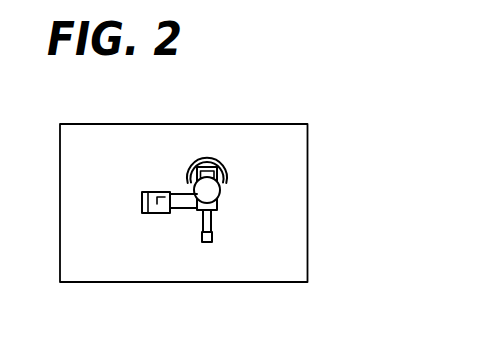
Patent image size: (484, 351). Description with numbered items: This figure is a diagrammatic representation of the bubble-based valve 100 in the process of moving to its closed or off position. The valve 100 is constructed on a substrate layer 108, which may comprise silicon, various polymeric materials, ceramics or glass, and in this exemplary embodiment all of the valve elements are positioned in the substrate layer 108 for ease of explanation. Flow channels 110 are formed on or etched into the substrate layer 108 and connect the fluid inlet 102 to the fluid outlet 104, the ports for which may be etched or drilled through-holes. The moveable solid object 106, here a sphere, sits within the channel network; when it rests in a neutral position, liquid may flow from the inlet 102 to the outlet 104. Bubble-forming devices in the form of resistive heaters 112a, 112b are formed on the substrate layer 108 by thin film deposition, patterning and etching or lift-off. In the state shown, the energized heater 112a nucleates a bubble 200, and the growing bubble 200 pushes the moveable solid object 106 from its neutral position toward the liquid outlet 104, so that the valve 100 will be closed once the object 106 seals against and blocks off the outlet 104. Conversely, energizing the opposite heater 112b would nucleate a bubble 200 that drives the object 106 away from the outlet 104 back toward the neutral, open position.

The bubble-based valve 100 is at (268, 108).
The inlet 102 is at (156, 192).
The outlet 104 is at (217, 207).
The moveable solid object 106 is at (216, 190).
The substrate layer 108 is at (308, 137).
The flow channels 110 is at (180, 202).
The heater 112a is at (214, 174).
The heater 112b is at (212, 238).
The bubble 200 is at (200, 162).